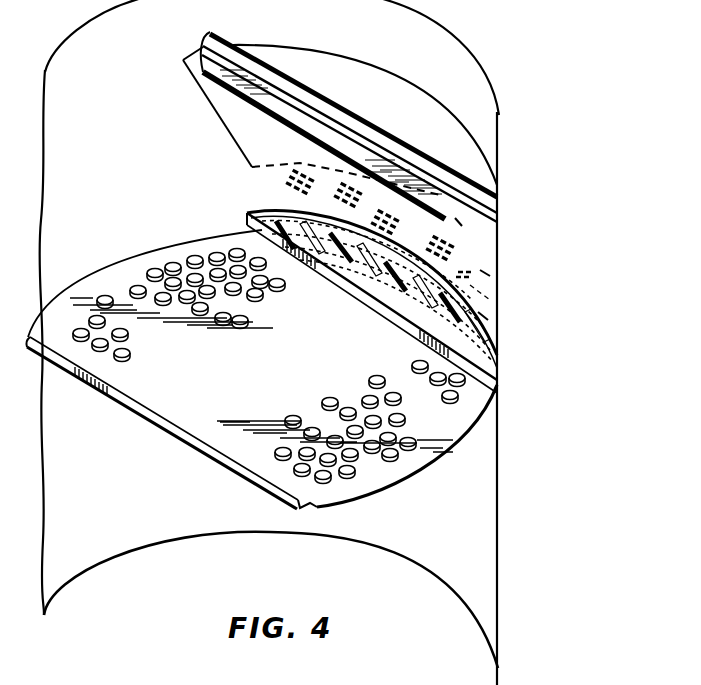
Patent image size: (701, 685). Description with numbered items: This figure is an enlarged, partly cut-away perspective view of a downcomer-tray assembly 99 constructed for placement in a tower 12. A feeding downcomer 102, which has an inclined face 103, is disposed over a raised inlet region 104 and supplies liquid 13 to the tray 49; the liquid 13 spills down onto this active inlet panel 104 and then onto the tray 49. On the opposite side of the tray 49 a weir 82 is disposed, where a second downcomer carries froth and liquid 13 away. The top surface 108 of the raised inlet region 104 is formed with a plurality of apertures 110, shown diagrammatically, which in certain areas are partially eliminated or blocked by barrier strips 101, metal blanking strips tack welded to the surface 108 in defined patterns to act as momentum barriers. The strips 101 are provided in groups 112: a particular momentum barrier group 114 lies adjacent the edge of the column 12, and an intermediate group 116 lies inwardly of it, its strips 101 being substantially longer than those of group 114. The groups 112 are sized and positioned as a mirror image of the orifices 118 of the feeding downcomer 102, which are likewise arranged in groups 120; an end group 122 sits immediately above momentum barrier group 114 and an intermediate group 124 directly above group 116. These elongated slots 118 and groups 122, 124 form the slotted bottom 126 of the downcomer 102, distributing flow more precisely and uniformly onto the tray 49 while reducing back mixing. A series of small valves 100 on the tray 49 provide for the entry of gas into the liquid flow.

The tower 12 is at (497, 522).
The liquid 13 is at (455, 221).
The tray 49 is at (365, 488).
The weir 82 is at (190, 444).
The downcomer-tray assembly 99 is at (112, 170).
The small valves 100 is at (195, 257).
The barrier strips 101 is at (356, 282).
The feeding downcomer 102 is at (311, 153).
The inclined face 103 is at (242, 138).
The raised inlet region 104 is at (290, 381).
The top surface 108 is at (514, 306).
The apertures 110 is at (391, 287).
The momentum barrier groups 112 is at (307, 266).
The momentum barrier group 114 is at (485, 300).
The intermediate momentum barrier group 116 is at (485, 272).
The orifices 118 is at (474, 265).
The orifice groups 120 is at (375, 128).
The end orifice group 122 is at (464, 254).
The intermediate orifice group 124 is at (374, 127).
The downcomer bottom 126 is at (330, 172).